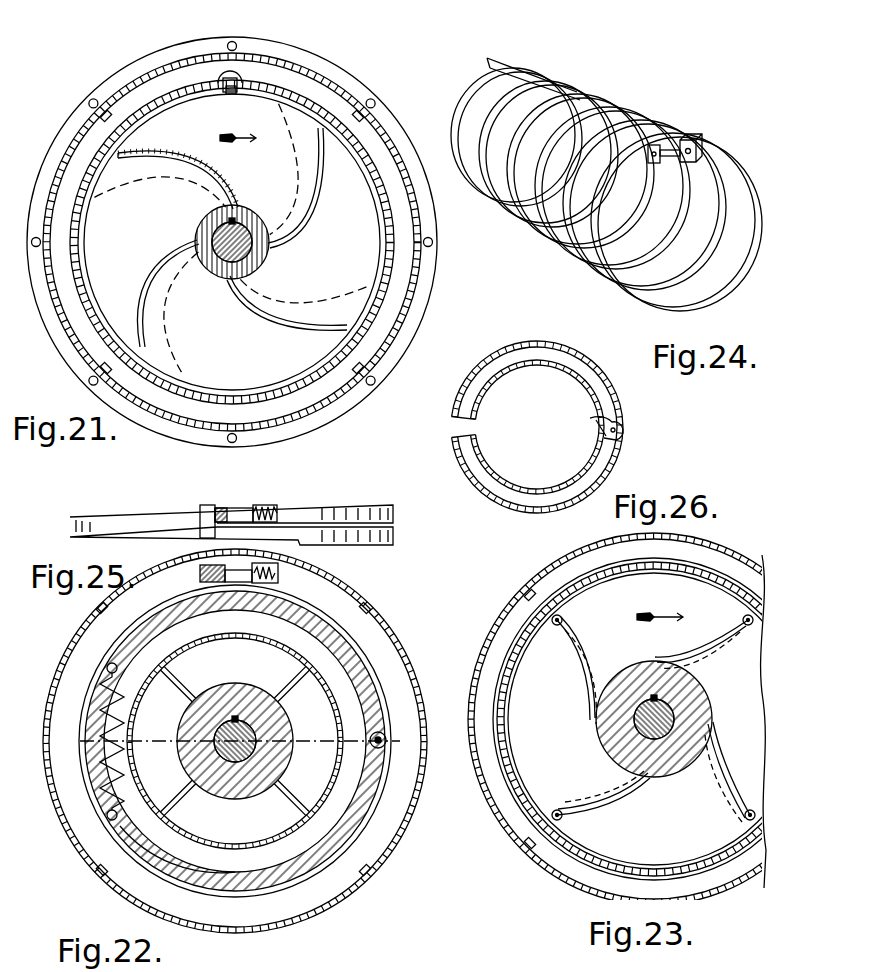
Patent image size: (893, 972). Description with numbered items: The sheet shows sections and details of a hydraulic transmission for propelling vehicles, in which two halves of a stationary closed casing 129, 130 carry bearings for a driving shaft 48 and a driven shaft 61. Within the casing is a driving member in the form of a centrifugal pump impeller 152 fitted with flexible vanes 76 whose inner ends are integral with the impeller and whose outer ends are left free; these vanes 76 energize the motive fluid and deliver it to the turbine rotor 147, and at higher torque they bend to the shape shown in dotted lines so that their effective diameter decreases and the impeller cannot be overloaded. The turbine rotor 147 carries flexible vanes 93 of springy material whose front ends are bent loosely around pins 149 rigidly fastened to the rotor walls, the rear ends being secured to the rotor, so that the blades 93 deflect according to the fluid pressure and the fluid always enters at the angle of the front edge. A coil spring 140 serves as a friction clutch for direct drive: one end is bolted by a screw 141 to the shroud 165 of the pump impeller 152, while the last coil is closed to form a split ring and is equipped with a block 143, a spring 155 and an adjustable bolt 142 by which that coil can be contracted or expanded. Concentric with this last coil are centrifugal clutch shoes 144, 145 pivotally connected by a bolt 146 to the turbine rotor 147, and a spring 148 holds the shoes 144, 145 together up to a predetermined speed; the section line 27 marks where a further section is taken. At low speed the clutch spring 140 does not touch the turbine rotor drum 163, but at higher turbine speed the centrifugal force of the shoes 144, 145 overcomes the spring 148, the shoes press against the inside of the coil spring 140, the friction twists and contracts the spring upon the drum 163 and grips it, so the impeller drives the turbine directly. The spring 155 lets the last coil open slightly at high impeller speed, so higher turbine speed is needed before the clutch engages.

In FIG. 21, the casing half 129 is at (314, 64).
In FIG. 21, the coil spring 140 is at (320, 107).
In FIG. 24, the coil spring 140 is at (654, 138).
In FIG. 25, the coil spring 140 is at (353, 510).
In FIG. 21, the screw 141 is at (238, 79).
In FIG. 21, the shroud 165 is at (246, 95).
In FIG. 21, the vanes 76 is at (197, 167).
In FIG. 21, the pump impeller 152 is at (258, 228).
In FIG. 21, the driving shaft 48 is at (215, 258).
In FIG. 24, the block 143 is at (698, 143).
In FIG. 25, the block 143 is at (205, 505).
In FIG. 22, the block 143 is at (200, 575).
In FIG. 26, the centrifugal clutch shoe 144 is at (568, 364).
In FIG. 22, the centrifugal clutch shoe 144 is at (280, 608).
In FIG. 26, the centrifugal clutch shoe 145 is at (513, 502).
In FIG. 22, the centrifugal clutch shoe 145 is at (193, 882).
In FIG. 25, the adjustable bolt 142 is at (240, 510).
In FIG. 22, the adjustable bolt 142 is at (278, 574).
In FIG. 25, the spring 155 is at (265, 508).
In FIG. 22, the turbine rotor 147 is at (332, 700).
In FIG. 23, the turbine rotor 147 is at (700, 692).
In FIG. 22, the bolt 146 is at (383, 732).
In FIG. 22, the section line 27 is at (66, 732).
In FIG. 22, the spring 148 is at (97, 757).
In FIG. 22, the driven shaft 61 is at (220, 748).
In FIG. 23, the driven shaft 61 is at (635, 728).
In FIG. 23, the pins 149 is at (560, 620).
In FIG. 23, the flexible vanes 93 is at (576, 665).
In FIG. 23, the casing half 130 is at (552, 873).
In FIG. 23, the turbine rotor drum 163 is at (737, 842).